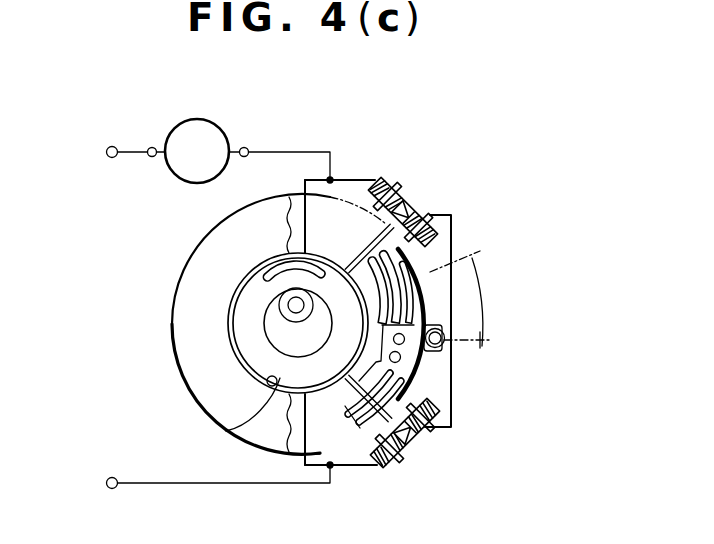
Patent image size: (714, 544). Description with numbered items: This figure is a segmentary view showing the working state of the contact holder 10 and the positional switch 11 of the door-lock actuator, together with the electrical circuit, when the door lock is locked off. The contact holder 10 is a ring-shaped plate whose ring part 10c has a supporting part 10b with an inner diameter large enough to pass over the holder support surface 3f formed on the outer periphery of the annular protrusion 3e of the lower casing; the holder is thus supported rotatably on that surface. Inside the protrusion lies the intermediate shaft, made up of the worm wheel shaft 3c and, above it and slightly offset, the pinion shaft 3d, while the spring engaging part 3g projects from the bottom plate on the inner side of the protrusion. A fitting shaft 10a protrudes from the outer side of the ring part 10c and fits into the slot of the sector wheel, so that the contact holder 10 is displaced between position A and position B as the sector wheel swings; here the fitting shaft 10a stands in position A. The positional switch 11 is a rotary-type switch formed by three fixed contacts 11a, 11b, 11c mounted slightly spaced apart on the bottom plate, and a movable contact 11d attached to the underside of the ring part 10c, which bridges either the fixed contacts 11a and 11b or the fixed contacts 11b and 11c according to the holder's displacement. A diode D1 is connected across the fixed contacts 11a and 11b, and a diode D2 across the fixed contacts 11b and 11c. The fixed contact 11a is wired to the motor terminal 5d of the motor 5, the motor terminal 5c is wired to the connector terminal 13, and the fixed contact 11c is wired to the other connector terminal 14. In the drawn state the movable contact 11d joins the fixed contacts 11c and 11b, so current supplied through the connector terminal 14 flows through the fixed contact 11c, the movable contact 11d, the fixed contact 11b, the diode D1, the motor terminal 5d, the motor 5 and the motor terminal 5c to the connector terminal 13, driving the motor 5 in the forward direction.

The worm wheel shaft 3c is at (265, 344).
The pinion shaft 3d is at (265, 320).
The annular protrusion 3e is at (240, 362).
The holder support surface 3f is at (268, 280).
The spring engaging part 3g is at (280, 298).
The motor 5 is at (188, 119).
The motor terminal 5c is at (150, 148).
The motor terminal 5d is at (248, 149).
The contact holder 10 is at (204, 411).
The fitting shaft 10a is at (440, 353).
The supporting part 10b is at (230, 427).
The ring part 10c is at (238, 230).
The positional switch 11 is at (416, 273).
The fixed contact 11a is at (350, 180).
The fixed contact 11b is at (400, 252).
The fixed contact 11c is at (357, 458).
The movable contact 11d is at (420, 368).
The connector terminal 13 is at (106, 158).
The connector terminal 14 is at (105, 486).
The diode D1 is at (408, 193).
The diode D2 is at (420, 443).
The position A is at (477, 343).
The position B is at (467, 294).